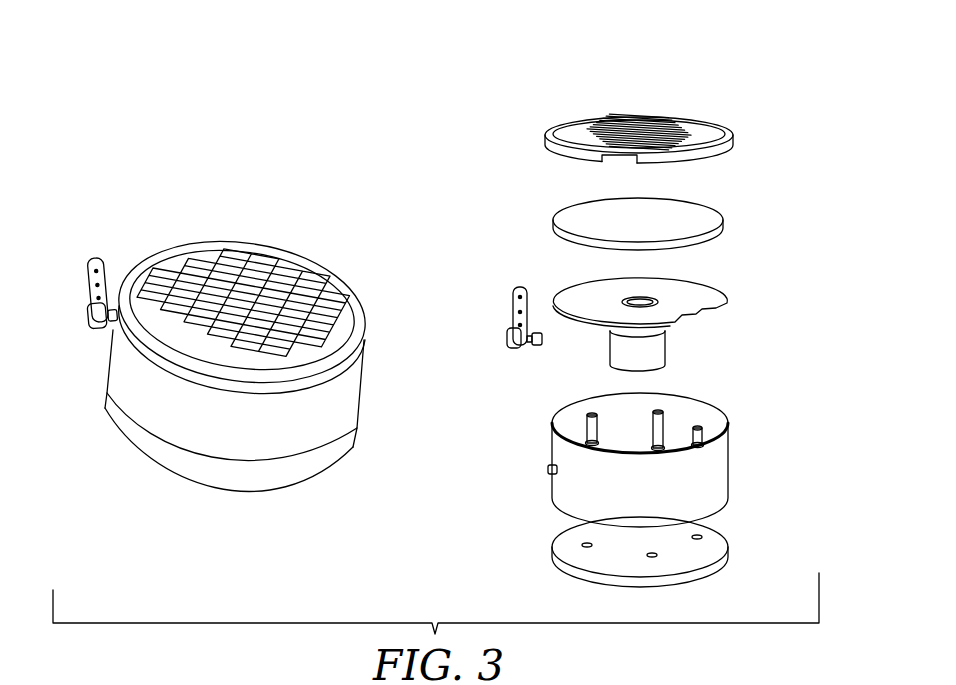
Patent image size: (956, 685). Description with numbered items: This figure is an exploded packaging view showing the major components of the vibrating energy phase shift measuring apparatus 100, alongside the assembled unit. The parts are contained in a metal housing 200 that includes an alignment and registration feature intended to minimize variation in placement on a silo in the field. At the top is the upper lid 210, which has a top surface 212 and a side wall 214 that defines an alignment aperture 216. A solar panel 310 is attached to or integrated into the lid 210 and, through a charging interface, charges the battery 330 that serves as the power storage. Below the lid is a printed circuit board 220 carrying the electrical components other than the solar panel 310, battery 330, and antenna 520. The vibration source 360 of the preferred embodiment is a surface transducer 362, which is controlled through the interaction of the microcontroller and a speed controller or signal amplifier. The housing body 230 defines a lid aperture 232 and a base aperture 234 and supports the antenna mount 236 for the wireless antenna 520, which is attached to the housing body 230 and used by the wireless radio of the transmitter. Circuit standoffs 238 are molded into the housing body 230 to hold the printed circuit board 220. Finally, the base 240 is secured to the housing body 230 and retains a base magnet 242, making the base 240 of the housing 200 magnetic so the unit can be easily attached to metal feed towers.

The vibrating energy phase shift measuring apparatus 100 is at (133, 223).
The housing 200 is at (358, 398).
The upper lid 210 is at (545, 140).
The top surface 212 is at (673, 113).
The side wall 214 is at (733, 143).
The alignment aperture 216 is at (598, 162).
The solar panel 310 is at (624, 118).
The battery 330 is at (553, 224).
The printed circuit board 220 is at (727, 300).
The wireless antenna 520 is at (513, 300).
The vibration source 360 is at (610, 360).
The surface transducer 362 is at (667, 348).
The housing body 230 is at (552, 440).
The lid aperture 232 is at (687, 402).
The base aperture 234 is at (718, 507).
The antenna mount 236 is at (548, 468).
The circuit standoffs 238 is at (695, 427).
The base 240 is at (552, 548).
The base magnet 242 is at (687, 578).